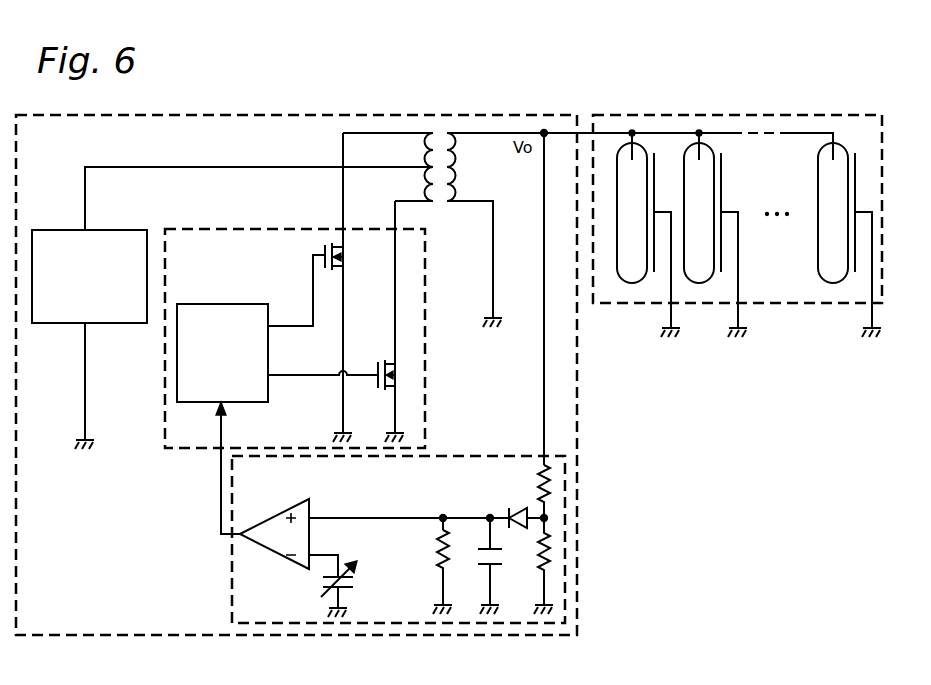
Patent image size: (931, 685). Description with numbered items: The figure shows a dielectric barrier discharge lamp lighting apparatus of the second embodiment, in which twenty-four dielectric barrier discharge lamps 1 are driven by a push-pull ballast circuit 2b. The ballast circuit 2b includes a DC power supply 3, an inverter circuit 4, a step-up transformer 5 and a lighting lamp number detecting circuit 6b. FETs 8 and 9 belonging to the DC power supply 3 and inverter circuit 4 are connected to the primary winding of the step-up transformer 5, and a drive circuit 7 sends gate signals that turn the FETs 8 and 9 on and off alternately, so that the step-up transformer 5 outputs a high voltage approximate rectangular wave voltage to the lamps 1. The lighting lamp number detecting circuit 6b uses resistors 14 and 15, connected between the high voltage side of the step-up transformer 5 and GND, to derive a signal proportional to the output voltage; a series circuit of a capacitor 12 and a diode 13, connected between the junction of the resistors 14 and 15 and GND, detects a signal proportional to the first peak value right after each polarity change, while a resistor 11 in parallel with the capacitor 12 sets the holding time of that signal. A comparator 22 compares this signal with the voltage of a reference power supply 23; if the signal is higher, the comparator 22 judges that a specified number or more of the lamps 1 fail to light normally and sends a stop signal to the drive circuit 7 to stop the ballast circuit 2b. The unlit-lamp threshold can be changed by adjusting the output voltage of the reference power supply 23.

The dielectric barrier discharge lamp 1 is at (725, 113).
The ballast circuit 2b is at (213, 115).
The direct-current power supply 3 is at (103, 229).
The inverter circuit 4 is at (258, 228).
The step-up transformer 5 is at (447, 209).
The lighting lamp number detecting circuit 6b is at (458, 456).
The drive circuit 7 is at (210, 303).
The FET 8 is at (306, 262).
The FET 9 is at (385, 360).
The resistor 11 is at (435, 555).
The capacitor 12 is at (486, 573).
The diode 13 is at (508, 512).
The resistor 14 is at (535, 490).
The resistor 15 is at (536, 573).
The comparator 22 is at (300, 500).
The reference power supply 23 is at (318, 583).